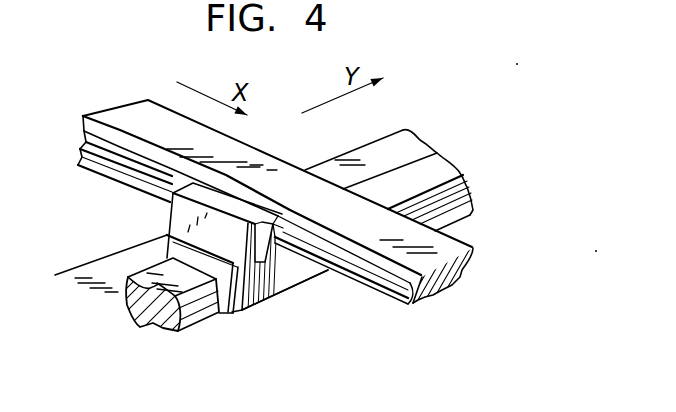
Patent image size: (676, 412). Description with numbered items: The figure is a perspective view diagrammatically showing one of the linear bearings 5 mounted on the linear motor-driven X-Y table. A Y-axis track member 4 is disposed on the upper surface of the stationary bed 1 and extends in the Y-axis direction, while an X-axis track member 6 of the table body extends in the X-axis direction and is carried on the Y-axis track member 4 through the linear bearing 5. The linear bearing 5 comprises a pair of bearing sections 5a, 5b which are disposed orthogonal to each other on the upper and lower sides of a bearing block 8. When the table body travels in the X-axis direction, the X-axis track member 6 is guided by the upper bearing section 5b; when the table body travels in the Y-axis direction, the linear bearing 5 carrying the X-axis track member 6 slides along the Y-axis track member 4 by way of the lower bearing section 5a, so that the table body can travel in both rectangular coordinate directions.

The stationary bed 1 is at (90, 273).
The Y-axis track member 4 is at (163, 272).
The linear bearing 5 is at (273, 280).
The bearing section 5a is at (218, 290).
The upper bearing section 5b is at (268, 253).
The X-axis track member 6 is at (380, 268).
The bearing block 8 is at (302, 278).